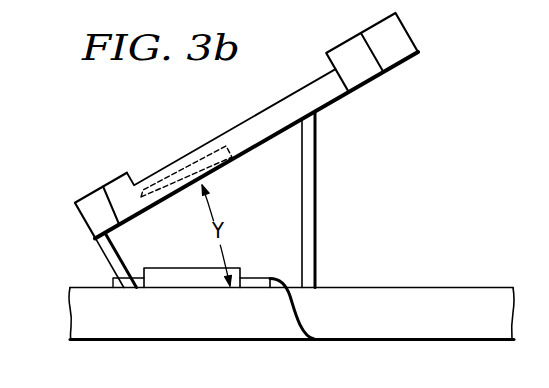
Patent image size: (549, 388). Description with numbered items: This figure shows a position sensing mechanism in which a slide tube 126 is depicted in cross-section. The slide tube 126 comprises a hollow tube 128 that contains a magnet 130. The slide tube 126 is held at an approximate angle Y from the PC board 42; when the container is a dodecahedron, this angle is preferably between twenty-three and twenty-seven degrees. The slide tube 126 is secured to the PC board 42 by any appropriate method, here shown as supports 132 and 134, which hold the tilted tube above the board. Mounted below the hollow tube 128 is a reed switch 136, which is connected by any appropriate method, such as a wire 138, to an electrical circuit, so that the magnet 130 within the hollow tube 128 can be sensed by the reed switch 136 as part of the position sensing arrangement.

The PC board 42 is at (399, 326).
The slide tube 126 is at (417, 36).
The hollow tube 128 is at (276, 104).
The magnet 130 is at (181, 172).
The support 132 is at (314, 167).
The support 134 is at (112, 266).
The reed switch 136 is at (197, 268).
The wire 138 is at (288, 306).